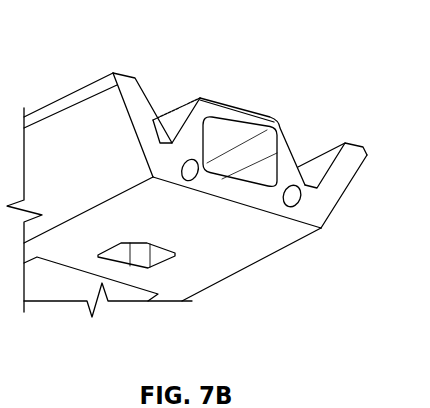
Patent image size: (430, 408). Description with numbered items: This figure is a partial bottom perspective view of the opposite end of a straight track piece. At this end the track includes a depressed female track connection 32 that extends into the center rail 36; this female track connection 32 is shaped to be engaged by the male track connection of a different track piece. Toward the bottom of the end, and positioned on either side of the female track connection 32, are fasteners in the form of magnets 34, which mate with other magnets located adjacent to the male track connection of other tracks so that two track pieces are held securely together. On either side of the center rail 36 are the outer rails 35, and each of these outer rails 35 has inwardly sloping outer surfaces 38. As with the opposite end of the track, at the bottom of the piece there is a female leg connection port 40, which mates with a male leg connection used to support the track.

The female track connection 32 is at (238, 140).
The magnets 34 is at (188, 170).
The outer rails 35 is at (122, 72).
The center rail 36 is at (218, 100).
The inwardly sloping outer surfaces 38 is at (73, 128).
The female leg connection port 40 is at (140, 258).